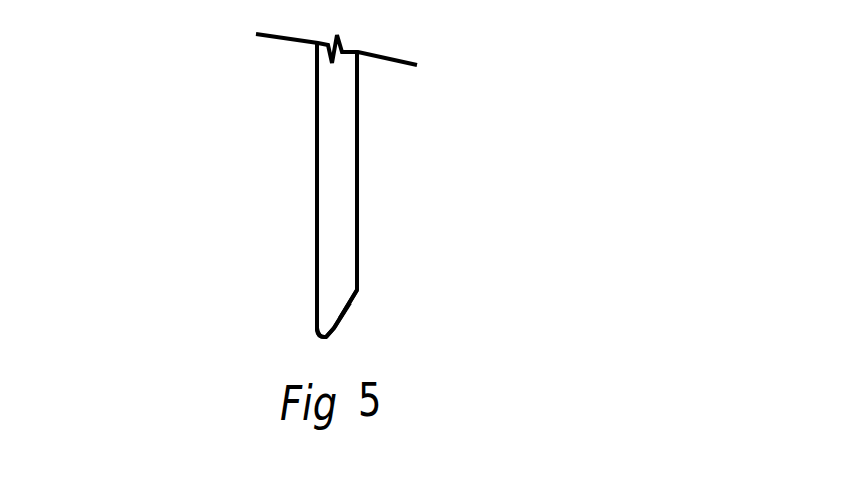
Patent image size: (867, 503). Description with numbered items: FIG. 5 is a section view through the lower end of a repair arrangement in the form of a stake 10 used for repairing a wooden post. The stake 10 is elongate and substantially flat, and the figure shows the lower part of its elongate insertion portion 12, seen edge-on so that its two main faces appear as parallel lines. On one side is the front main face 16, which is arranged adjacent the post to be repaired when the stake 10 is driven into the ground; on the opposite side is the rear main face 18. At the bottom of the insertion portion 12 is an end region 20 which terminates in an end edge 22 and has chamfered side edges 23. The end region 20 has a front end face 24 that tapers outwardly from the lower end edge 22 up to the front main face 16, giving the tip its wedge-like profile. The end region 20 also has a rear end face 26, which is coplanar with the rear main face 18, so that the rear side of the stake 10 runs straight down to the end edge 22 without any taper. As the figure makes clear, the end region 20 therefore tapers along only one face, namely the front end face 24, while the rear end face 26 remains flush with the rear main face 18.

The stake 10 is at (362, 222).
The insertion portion 12 is at (360, 100).
The front main face 16 is at (360, 160).
The rear main face 18 is at (315, 150).
The end region 20 is at (332, 294).
The end edge 22 is at (317, 338).
The chamfered side edges 23 is at (325, 320).
The front end face 24 is at (341, 311).
The rear end face 26 is at (317, 312).